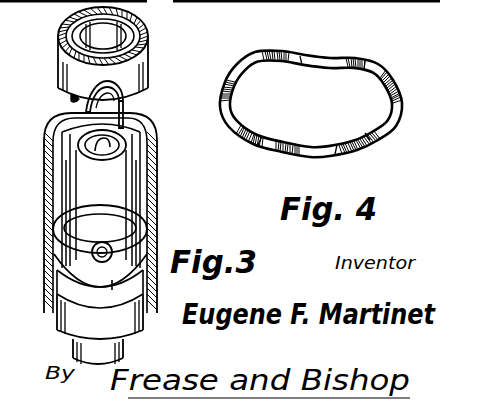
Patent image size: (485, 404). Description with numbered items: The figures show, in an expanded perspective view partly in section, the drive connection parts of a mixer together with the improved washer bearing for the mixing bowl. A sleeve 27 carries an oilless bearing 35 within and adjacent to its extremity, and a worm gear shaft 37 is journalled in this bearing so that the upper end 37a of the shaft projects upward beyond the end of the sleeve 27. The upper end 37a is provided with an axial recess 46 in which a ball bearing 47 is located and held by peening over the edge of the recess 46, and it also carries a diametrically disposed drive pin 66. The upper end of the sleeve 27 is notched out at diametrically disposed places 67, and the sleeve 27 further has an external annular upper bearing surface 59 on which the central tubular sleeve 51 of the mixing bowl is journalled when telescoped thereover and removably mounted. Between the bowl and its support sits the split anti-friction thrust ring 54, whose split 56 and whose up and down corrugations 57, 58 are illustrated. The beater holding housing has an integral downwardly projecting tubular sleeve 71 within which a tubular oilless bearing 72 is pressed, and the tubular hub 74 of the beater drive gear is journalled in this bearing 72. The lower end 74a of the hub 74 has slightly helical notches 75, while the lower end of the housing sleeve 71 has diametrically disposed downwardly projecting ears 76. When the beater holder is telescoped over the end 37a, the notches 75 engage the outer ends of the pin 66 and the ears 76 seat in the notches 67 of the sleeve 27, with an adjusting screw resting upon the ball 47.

In FIG. 3, the sleeve 27 is at (70, 320).
In FIG. 3, the oilless bearing 35 is at (112, 283).
In FIG. 3, the worm gear shaft 37 is at (110, 350).
In FIG. 3, the upper end of shaft 37a is at (122, 209).
In FIG. 3, the axial recess 46 is at (110, 164).
In FIG. 3, the ball bearing 47 is at (118, 148).
In FIG. 3, the central tubular sleeve 51 is at (157, 203).
In FIG. 4, the split anti-friction thrust ring 54 is at (385, 67).
In FIG. 4, the split 56 is at (372, 141).
In FIG. 4, the up corrugations 57 is at (282, 62).
In FIG. 4, the down corrugations 58 is at (316, 60).
In FIG. 3, the external annular upper bearing surface 59 is at (54, 281).
In FIG. 3, the drive pin 66 is at (91, 253).
In FIG. 3, the notches 67 is at (58, 214).
In FIG. 3, the tubular sleeve 71 is at (138, 61).
In FIG. 3, the tubular oilless bearing 72 is at (143, 31).
In FIG. 3, the tubular hub 74 is at (66, 41).
In FIG. 3, the lower end of hub 74a is at (77, 106).
In FIG. 3, the helical notches 75 is at (116, 93).
In FIG. 3, the ears 76 is at (125, 116).